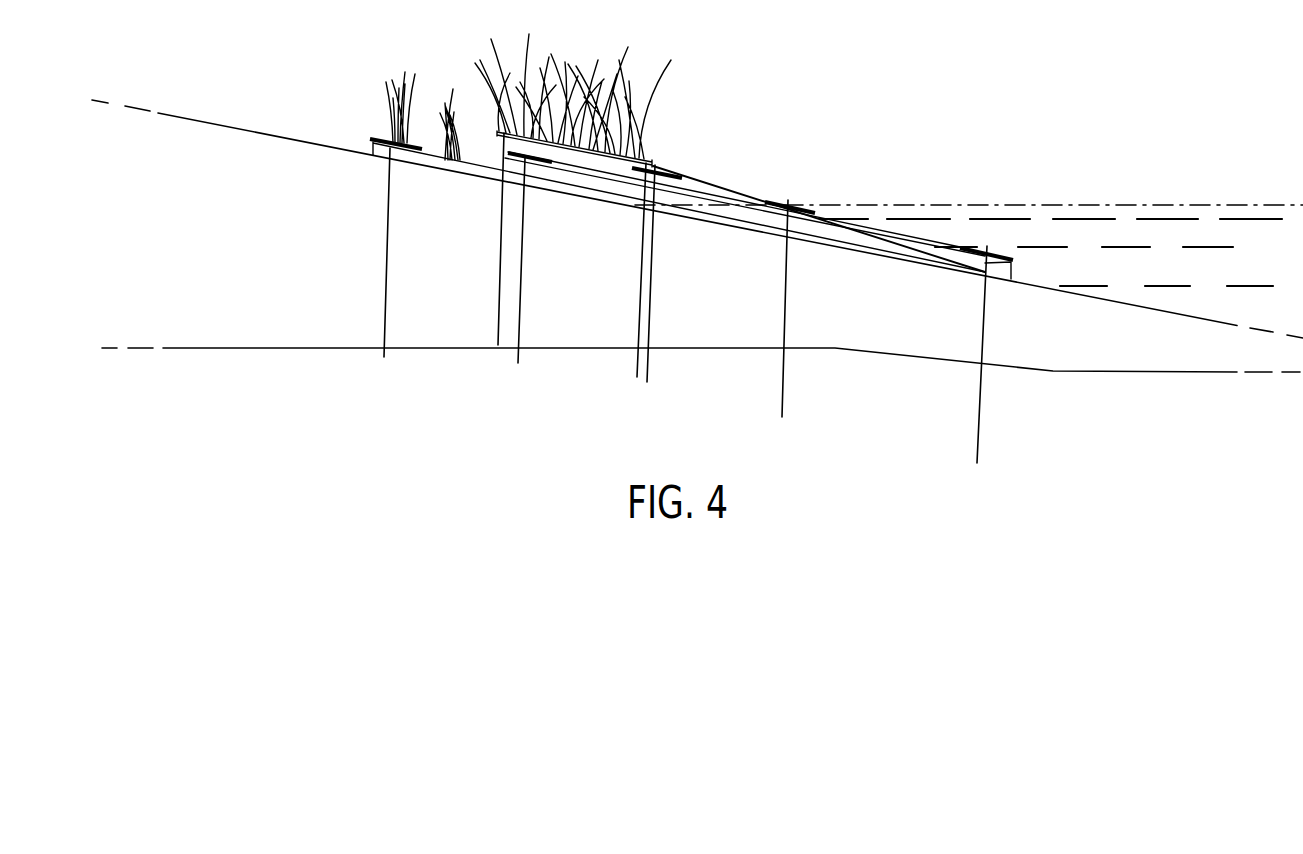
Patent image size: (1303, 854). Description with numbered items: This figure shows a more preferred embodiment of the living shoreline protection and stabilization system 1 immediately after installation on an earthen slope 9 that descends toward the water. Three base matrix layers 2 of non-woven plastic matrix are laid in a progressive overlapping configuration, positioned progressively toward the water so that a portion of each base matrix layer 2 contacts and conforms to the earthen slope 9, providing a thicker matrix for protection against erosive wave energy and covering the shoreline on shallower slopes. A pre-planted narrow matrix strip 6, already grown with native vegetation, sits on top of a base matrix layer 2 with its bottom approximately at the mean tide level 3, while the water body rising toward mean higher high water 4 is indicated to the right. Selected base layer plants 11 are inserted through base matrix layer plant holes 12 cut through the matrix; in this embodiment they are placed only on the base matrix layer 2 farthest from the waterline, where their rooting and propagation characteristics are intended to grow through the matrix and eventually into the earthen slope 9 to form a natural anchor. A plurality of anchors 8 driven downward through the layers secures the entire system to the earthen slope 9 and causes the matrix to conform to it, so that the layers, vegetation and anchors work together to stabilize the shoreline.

The living shoreline protection and stabilization system 1 is at (577, 92).
The base matrix layer 2 is at (746, 203).
The mean tide level 3 is at (1000, 205).
The mean higher high water 4 is at (1178, 272).
The pre-planted narrow matrix strip 6 is at (613, 143).
The anchors 8 is at (982, 414).
The earthen slope 9 is at (236, 150).
The selected base layer plants 11 is at (452, 105).
The base matrix layer plant holes 12 is at (390, 141).